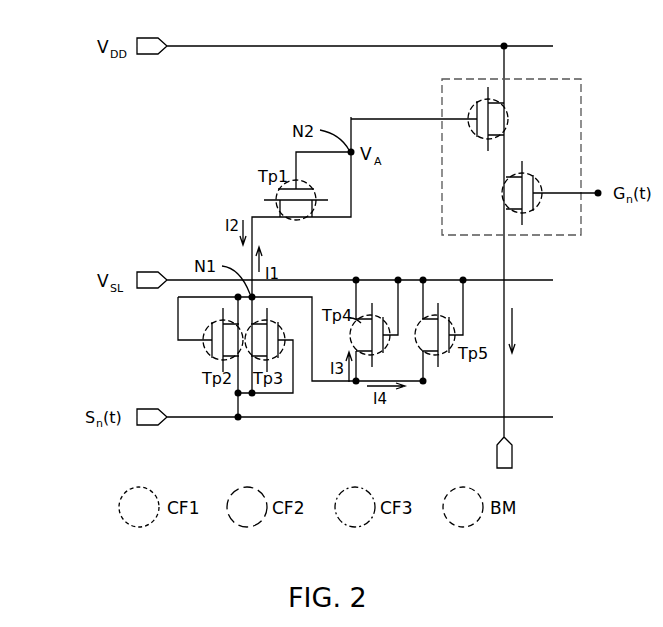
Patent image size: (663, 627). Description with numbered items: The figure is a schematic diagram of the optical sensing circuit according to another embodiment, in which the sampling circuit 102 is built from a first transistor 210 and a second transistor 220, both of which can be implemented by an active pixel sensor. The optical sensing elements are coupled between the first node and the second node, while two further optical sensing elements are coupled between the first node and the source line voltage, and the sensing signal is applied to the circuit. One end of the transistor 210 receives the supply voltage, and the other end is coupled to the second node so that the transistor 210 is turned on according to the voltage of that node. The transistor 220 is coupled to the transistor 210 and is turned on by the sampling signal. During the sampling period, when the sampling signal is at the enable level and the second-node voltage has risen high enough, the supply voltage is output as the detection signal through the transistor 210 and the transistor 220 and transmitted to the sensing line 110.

The sampling circuit 102 is at (582, 108).
The sensing line 110 is at (505, 382).
The transistor 210 is at (505, 119).
The transistor 220 is at (552, 193).